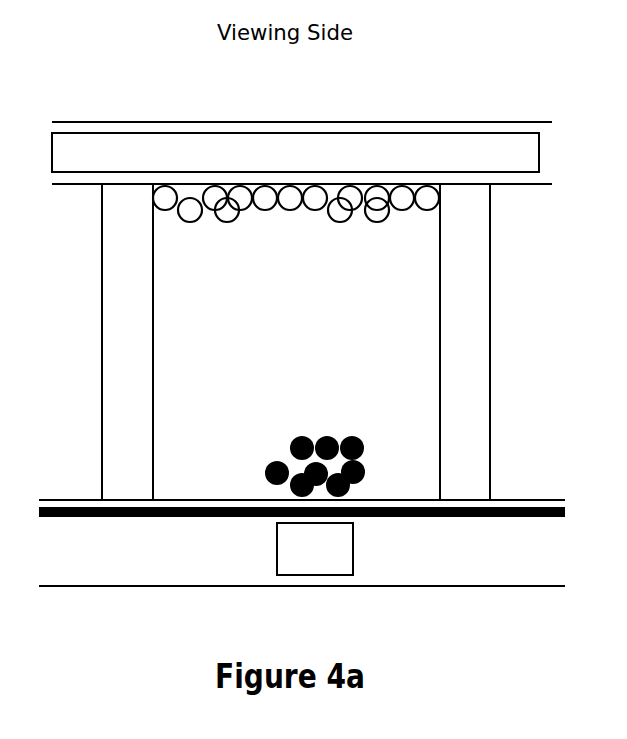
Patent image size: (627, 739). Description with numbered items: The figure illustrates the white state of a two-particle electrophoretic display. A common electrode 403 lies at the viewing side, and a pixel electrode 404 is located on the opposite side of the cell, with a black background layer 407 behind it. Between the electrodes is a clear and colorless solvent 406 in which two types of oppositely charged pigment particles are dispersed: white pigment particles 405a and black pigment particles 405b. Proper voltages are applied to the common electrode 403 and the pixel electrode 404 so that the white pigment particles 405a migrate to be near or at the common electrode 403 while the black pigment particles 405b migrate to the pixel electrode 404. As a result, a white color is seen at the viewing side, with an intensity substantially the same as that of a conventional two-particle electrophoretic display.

The common electrode 403 is at (295, 152).
The pixel electrode 404 is at (315, 549).
The white charged pigment particles 405a is at (445, 199).
The black charged pigment particles 405b is at (263, 473).
The solvent 406 is at (404, 363).
The background layer 407 is at (569, 505).